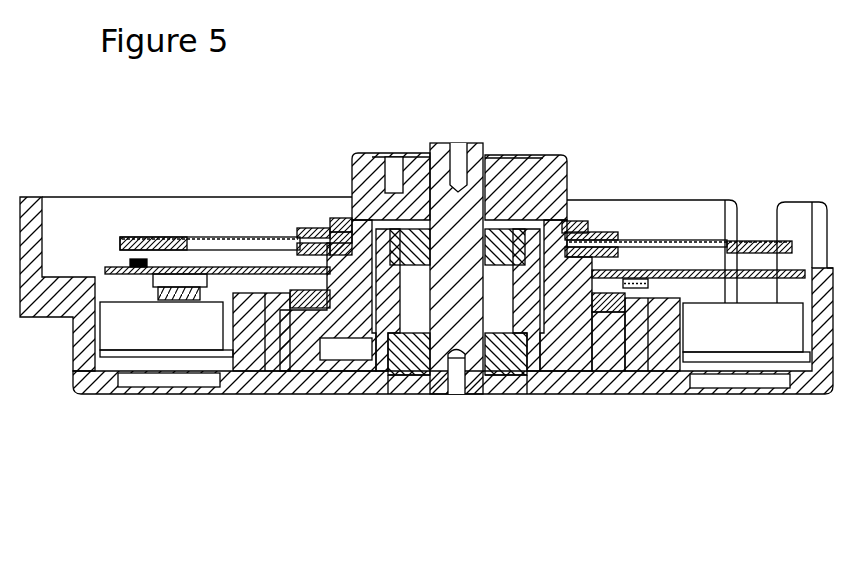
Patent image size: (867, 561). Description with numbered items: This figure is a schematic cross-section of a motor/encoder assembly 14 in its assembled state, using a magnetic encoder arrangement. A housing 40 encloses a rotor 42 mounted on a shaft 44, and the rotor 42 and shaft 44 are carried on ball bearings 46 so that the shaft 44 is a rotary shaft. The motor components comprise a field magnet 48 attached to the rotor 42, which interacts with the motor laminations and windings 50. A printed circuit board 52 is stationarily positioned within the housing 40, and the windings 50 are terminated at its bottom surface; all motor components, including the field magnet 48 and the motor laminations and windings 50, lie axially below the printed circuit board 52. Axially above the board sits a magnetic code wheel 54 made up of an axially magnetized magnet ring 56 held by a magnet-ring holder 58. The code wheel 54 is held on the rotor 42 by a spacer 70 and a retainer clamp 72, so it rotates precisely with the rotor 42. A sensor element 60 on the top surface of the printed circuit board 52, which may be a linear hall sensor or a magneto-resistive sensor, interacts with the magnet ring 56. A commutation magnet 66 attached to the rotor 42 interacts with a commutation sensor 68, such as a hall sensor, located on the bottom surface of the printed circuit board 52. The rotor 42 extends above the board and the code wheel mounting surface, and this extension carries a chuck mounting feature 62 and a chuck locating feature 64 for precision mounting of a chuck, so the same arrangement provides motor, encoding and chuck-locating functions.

The motor/encoder assembly 14 is at (478, 468).
The housing 40 is at (828, 335).
The rotor 42 is at (570, 167).
The shaft 44 is at (433, 392).
The ball bearings 46 is at (500, 380).
The field magnet 48 is at (667, 362).
The motor laminations and windings 50 is at (73, 357).
The printed circuit board 52 is at (240, 274).
The magnetic code wheel 54 is at (692, 228).
The axially magnetized magnet ring 56 is at (800, 243).
The magnet-ring holder 58 is at (657, 240).
The sensor element 60 is at (134, 258).
The chuck mounting feature 62 is at (365, 152).
The chuck locating feature 64 is at (488, 143).
The commutation magnet 66 is at (593, 225).
The commutation sensor 68 is at (642, 283).
The spacer 70 is at (305, 228).
The retainer clamp 72 is at (327, 217).